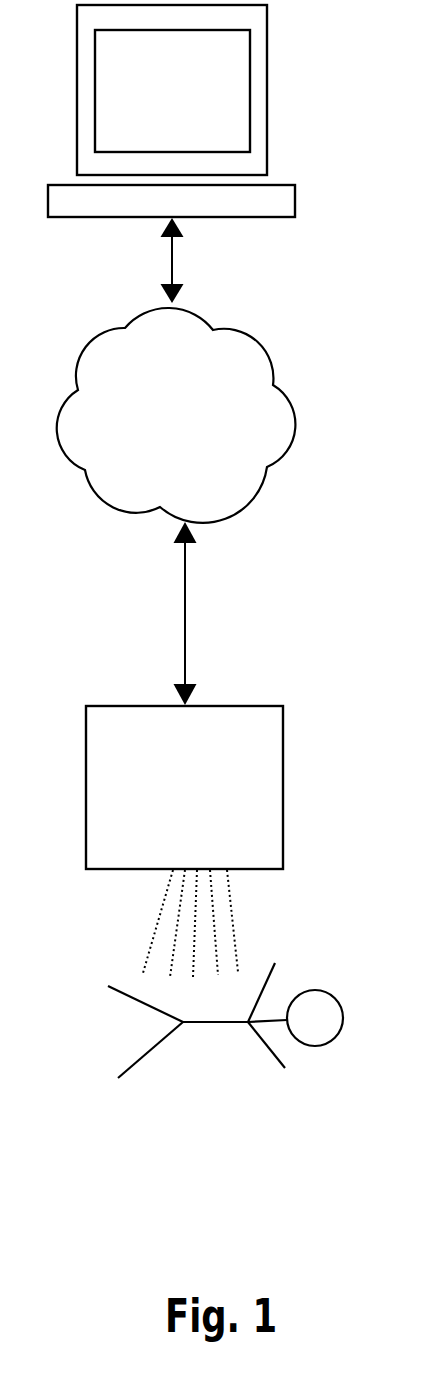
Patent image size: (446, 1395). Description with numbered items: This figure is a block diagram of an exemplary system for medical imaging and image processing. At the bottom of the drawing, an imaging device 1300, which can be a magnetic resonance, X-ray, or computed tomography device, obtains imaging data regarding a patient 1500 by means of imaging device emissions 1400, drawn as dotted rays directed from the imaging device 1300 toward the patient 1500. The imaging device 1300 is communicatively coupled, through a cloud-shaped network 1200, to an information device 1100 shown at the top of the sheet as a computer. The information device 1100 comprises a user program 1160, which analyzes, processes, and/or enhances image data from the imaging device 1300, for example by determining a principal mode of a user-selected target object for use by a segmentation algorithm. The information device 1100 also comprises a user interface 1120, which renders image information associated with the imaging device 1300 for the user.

The information device 1100 is at (221, 260).
The user interface 1120 is at (171, 111).
The user program 1160 is at (172, 91).
The network 1200 is at (176, 506).
The imaging device 1300 is at (184, 787).
The imaging device emissions 1400 is at (226, 923).
The patient 1500 is at (225, 1039).